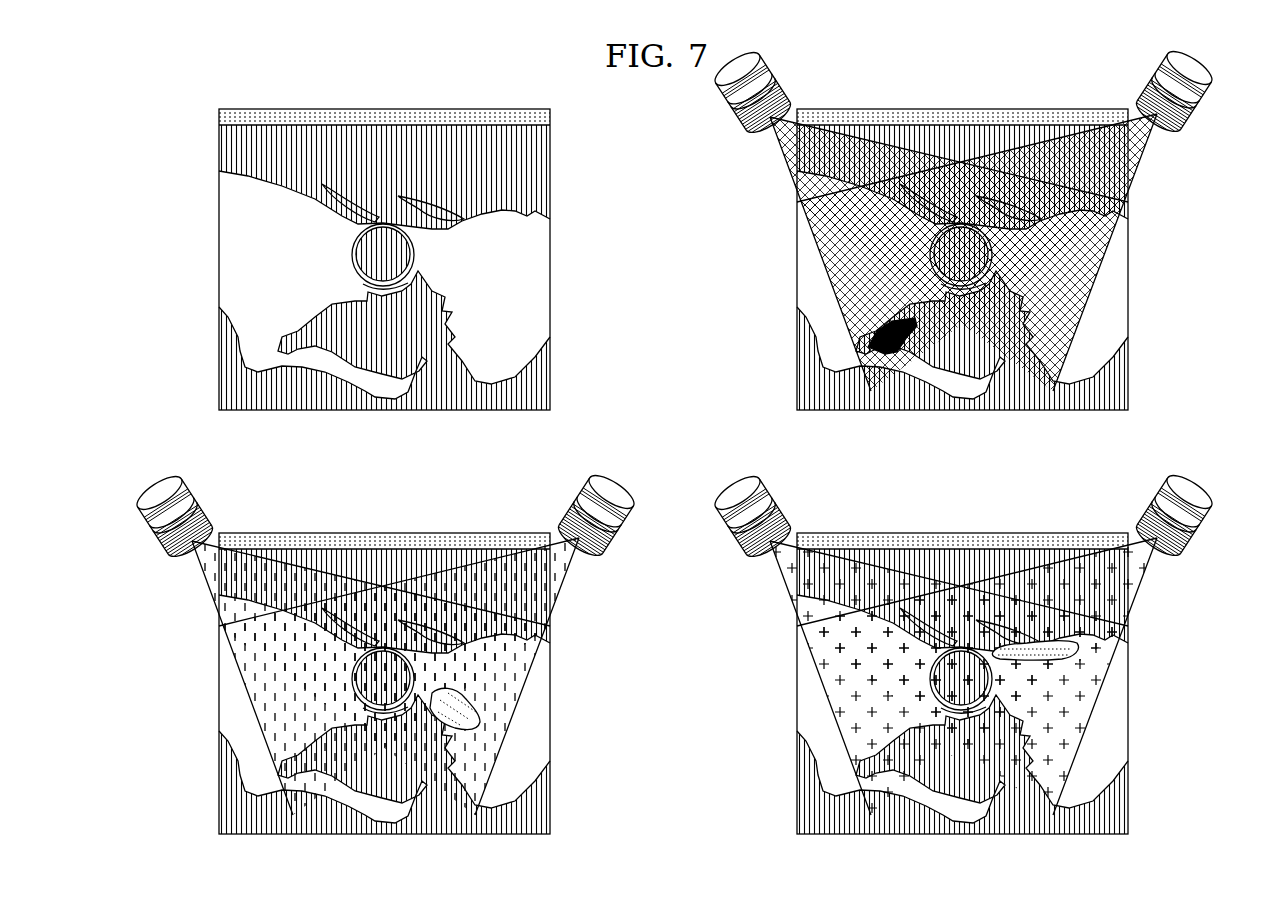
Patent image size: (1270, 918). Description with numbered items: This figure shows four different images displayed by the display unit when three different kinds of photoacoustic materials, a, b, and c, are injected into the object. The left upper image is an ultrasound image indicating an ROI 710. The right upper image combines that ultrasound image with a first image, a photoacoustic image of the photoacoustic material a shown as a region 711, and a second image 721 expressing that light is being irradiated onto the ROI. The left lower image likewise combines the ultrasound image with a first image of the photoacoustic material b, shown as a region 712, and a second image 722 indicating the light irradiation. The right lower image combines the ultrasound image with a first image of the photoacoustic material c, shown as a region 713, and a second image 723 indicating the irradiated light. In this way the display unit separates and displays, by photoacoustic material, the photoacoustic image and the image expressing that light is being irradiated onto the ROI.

The ROI 710 is at (384, 109).
The first detected object region 711 is at (885, 354).
The second detected object region 712 is at (481, 718).
The third detected object region 713 is at (1078, 652).
The first ultrasound scan with transducers 721 is at (1151, 158).
The second ultrasound scan with transducers 722 is at (571, 582).
The third ultrasound scan with transducers 723 is at (1150, 581).